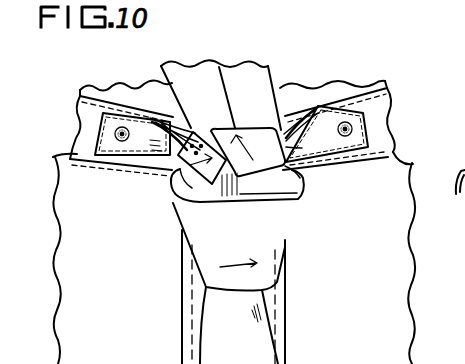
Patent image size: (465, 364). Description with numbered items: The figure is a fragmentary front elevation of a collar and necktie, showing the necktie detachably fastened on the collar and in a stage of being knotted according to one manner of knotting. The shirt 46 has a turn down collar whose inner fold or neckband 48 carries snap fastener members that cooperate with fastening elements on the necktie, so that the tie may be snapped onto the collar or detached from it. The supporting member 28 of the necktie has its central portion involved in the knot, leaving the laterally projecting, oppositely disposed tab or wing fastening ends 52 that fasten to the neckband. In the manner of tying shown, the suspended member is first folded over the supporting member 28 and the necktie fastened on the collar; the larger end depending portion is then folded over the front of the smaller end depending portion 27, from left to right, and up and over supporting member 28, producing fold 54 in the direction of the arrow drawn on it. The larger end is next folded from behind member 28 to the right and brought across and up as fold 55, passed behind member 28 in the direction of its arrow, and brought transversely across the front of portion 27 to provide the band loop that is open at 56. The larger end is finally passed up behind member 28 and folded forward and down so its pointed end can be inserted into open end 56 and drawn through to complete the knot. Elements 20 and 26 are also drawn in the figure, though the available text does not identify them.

The loop band 20 is at (292, 218).
The upper strap 26 is at (286, 82).
The smaller end depending portion 27 is at (276, 340).
The supporting member 28 is at (392, 103).
The shirt 46 is at (411, 326).
The neckband 48 is at (83, 122).
The tab fastening ends 52 is at (113, 162).
The fold 54 is at (160, 196).
The fold 55 is at (303, 175).
The open end of band loop 56 is at (200, 195).